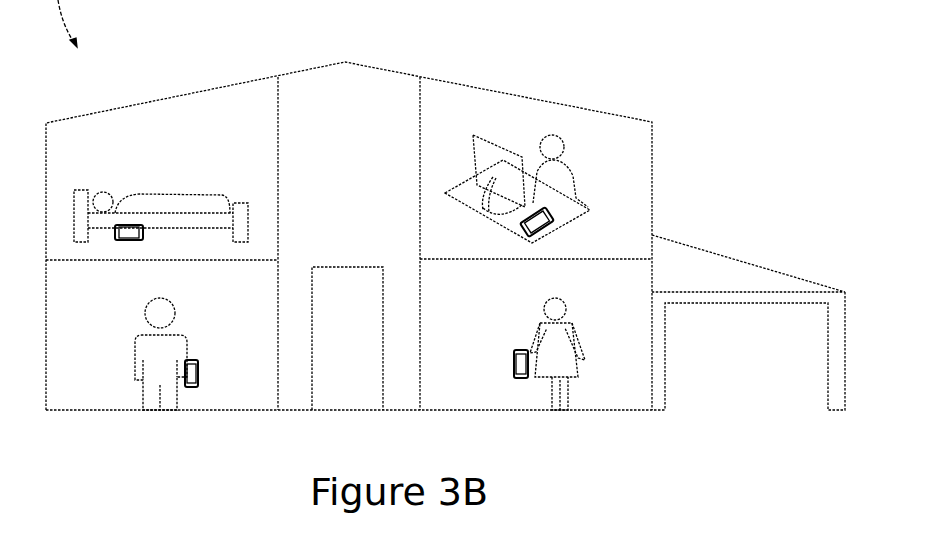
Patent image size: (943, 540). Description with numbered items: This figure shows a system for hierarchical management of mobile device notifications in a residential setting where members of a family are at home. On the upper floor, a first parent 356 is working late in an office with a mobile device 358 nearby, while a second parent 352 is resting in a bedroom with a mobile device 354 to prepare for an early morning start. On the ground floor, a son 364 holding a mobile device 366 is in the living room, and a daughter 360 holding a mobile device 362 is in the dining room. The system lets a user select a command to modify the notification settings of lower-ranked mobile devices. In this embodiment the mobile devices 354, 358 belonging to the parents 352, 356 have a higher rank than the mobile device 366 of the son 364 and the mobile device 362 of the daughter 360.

The second parent 352 is at (107, 197).
The mobile device 354 is at (145, 230).
The first parent 356 is at (565, 144).
The mobile device 358 is at (583, 215).
The daughter 360 is at (566, 306).
The mobile device 362 is at (513, 359).
The son 364 is at (155, 308).
The mobile device 366 is at (202, 370).